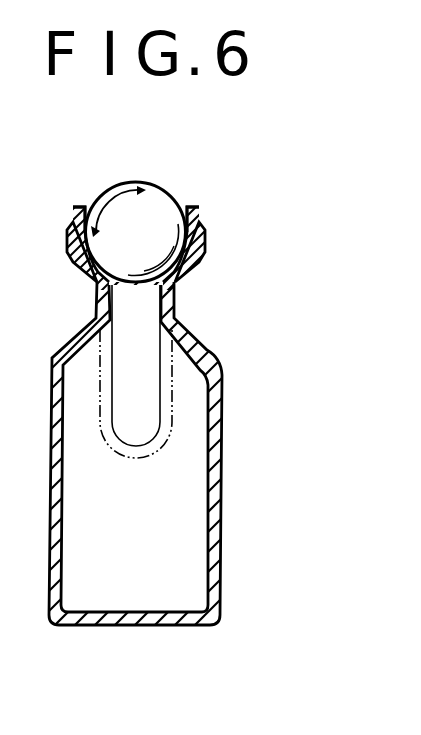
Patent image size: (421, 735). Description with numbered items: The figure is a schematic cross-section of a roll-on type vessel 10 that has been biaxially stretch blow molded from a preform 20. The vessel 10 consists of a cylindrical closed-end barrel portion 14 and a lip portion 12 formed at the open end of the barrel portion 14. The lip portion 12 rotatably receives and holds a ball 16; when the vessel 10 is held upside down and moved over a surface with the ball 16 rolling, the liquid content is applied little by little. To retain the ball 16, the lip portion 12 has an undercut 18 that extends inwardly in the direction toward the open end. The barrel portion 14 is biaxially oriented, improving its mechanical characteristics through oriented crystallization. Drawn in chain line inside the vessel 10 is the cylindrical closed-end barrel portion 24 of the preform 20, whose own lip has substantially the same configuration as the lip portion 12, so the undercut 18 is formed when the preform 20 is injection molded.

The vessel 10 is at (200, 314).
The lip portion 12 is at (212, 222).
The barrel portion 14 is at (221, 533).
The ball 16 is at (147, 183).
The undercut 18 is at (84, 207).
The preform 20 is at (184, 428).
The barrel portion of preform 24 is at (173, 377).